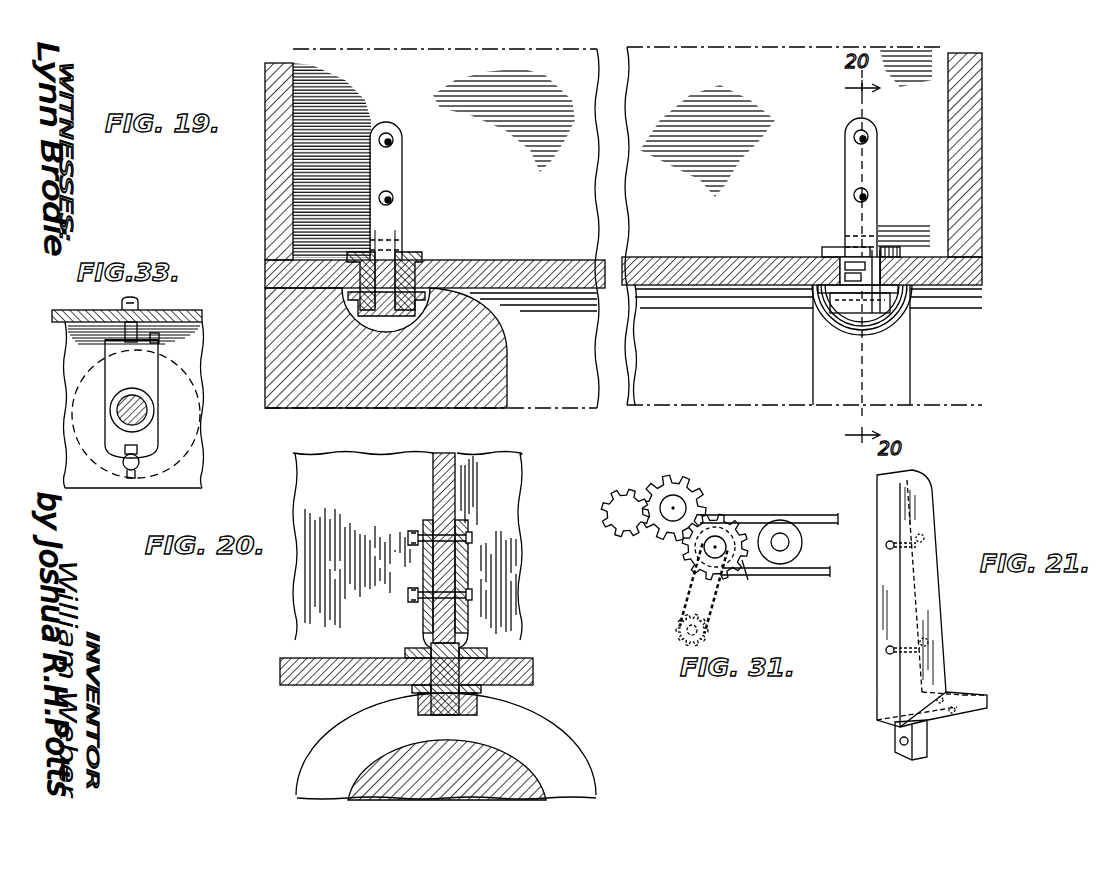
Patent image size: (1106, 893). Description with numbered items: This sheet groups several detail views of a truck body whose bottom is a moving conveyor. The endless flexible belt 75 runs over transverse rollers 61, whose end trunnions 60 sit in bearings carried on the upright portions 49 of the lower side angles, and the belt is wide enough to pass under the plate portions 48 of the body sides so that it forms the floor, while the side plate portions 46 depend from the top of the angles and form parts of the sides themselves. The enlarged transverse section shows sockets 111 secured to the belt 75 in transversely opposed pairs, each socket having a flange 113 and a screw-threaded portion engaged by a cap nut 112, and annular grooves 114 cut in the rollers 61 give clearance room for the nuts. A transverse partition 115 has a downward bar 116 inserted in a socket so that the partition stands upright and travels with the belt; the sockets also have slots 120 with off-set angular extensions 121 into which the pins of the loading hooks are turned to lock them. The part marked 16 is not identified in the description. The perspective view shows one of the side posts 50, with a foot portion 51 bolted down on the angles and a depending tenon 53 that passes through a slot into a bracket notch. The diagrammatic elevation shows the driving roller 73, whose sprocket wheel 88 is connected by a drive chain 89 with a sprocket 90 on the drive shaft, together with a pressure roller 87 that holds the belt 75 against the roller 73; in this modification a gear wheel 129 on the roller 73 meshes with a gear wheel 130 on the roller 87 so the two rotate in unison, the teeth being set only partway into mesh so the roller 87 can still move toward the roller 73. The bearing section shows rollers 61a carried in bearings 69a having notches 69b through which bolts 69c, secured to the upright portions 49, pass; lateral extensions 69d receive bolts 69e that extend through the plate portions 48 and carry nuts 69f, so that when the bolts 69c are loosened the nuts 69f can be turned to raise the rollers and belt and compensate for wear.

In FIG. 19, the side plate portions 46 is at (277, 198).
In FIG. 19, the hinge pin 16 is at (380, 268).
In FIG. 19, the sockets 111 is at (398, 262).
In FIG. 20, the sockets 111 is at (455, 670).
In FIG. 19, the transverse partitions 115 is at (623, 164).
In FIG. 20, the transverse partitions 115 is at (452, 490).
In FIG. 19, the flexible belt 75 is at (550, 264).
In FIG. 20, the flexible belt 75 is at (306, 662).
In FIG. 31, the flexible belt 75 is at (806, 515).
In FIG. 19, the cap nuts 112 is at (370, 317).
In FIG. 20, the cap nuts 112 is at (483, 695).
In FIG. 19, the annular grooves 114 is at (430, 300).
In FIG. 20, the annular grooves 114 is at (538, 740).
In FIG. 19, the rollers 61 is at (296, 343).
In FIG. 20, the rollers 61 is at (394, 772).
In FIG. 31, the rollers 61 is at (792, 545).
In FIG. 19, the flanges 113 is at (886, 250).
In FIG. 20, the flanges 113 is at (430, 650).
In FIG. 19, the slots 120 is at (850, 266).
In FIG. 19, the angular extensions of slots 121 is at (846, 278).
In FIG. 20, the bars 116 is at (486, 662).
In FIG. 31, the pressure roller 87 is at (686, 484).
In FIG. 31, the gear wheel 130 is at (624, 512).
In FIG. 31, the gear wheel 129 is at (731, 521).
In FIG. 31, the driving roller 73 is at (740, 556).
In FIG. 31, the drive chain 89 is at (686, 598).
In FIG. 31, the sprocket wheel 88 is at (743, 560).
In FIG. 31, the sprocket 90 is at (709, 635).
In FIG. 21, the posts 50 is at (924, 515).
In FIG. 21, the foot portions 51 is at (963, 705).
In FIG. 21, the depending tenons 53 is at (920, 742).
In FIG. 33, the plate portions 48 is at (108, 309).
In FIG. 33, the upright portions 49 is at (78, 353).
In FIG. 33, the end trunnions 60 is at (128, 408).
In FIG. 33, the rollers 61a is at (78, 432).
In FIG. 33, the bearings 69a is at (150, 393).
In FIG. 33, the notches 69b is at (124, 466).
In FIG. 33, the bolts 69c is at (142, 463).
In FIG. 33, the lateral extensions 69d is at (156, 336).
In FIG. 33, the bolts 69e is at (132, 344).
In FIG. 33, the nuts 69f is at (140, 309).